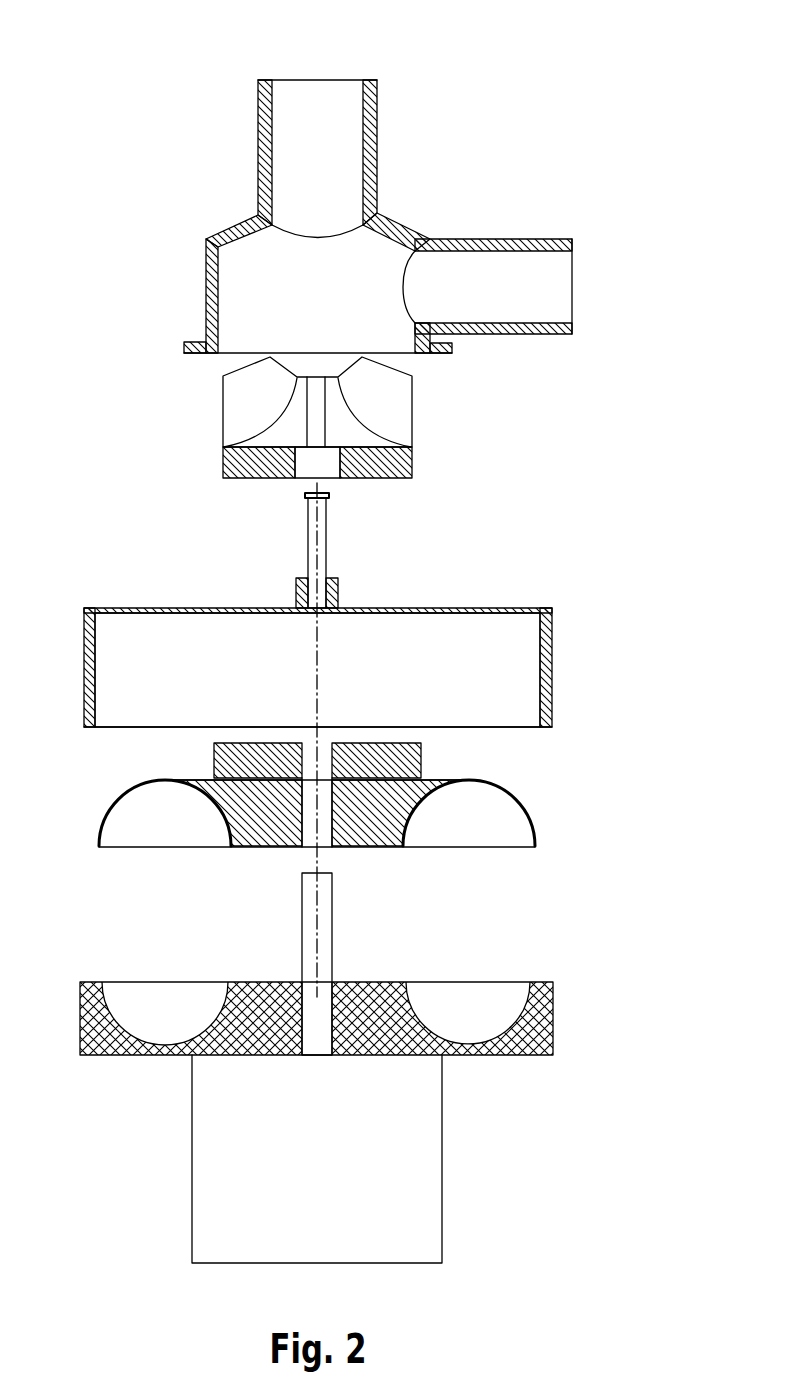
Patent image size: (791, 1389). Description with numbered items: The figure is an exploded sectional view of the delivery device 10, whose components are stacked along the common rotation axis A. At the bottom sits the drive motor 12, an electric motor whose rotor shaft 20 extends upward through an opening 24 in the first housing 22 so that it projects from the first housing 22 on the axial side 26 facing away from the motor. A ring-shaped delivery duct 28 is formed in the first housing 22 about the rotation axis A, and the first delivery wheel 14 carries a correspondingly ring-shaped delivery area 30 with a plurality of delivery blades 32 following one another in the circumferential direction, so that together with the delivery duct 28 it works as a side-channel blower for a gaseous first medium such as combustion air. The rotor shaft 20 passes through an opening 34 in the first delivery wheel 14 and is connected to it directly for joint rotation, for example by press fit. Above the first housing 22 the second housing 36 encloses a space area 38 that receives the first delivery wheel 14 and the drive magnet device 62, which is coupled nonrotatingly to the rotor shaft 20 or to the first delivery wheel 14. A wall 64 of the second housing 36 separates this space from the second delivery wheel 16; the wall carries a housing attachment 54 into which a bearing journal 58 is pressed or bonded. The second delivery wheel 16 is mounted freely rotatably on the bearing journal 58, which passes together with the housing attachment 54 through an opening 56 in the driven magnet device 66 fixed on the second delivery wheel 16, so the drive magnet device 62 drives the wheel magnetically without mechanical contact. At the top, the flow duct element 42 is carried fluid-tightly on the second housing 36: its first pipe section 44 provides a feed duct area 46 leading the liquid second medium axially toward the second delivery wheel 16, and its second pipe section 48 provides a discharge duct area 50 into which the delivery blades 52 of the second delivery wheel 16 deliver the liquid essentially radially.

The delivery device 10 is at (624, 100).
The drive motor 12 is at (442, 1135).
The first delivery wheel 14 is at (388, 848).
The second delivery wheel 16 is at (412, 422).
The rotor shaft 20 is at (332, 932).
The first housing 22 is at (553, 1023).
The opening 24 is at (327, 1050).
The axial side 26 is at (275, 982).
The delivery duct 28 is at (483, 1003).
The delivery area 30 is at (520, 798).
The delivery blades 32 is at (153, 830).
The opening 34 is at (308, 817).
The second housing 36 is at (552, 633).
The space area 38 is at (507, 689).
The flow duct element 42 is at (408, 225).
The first pipe section 44 is at (378, 92).
The feed duct area 46 is at (297, 120).
The second pipe section 48 is at (553, 239).
The discharge duct area 50 is at (553, 297).
The delivery blades 52 is at (250, 412).
The housing attachment 54 is at (338, 595).
The opening 56 is at (322, 468).
The bearing journal 58 is at (308, 552).
The drive magnet device 62 is at (214, 750).
The wall 64 is at (153, 608).
The driven magnet device 66 is at (224, 467).
The rotation axis A is at (317, 685).